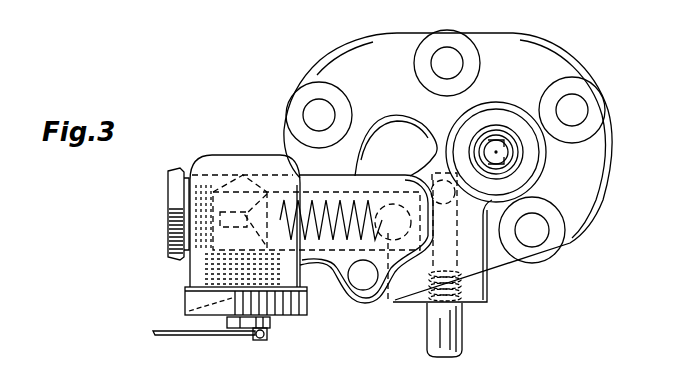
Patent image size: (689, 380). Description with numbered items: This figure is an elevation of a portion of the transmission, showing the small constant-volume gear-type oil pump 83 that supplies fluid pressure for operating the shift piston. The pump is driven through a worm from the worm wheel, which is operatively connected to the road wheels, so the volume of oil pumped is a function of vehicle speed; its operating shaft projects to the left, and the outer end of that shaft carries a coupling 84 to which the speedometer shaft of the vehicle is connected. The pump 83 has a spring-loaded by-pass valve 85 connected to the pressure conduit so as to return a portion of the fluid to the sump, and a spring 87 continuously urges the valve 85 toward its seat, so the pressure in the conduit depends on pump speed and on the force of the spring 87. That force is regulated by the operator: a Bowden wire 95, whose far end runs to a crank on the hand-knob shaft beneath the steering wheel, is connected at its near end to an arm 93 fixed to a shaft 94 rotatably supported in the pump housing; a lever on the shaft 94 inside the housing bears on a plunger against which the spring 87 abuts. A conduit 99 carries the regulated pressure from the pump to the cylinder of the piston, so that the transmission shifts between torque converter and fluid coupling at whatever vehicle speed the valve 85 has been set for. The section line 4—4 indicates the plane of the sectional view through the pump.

The oil pump 83 is at (523, 110).
The coupling 84 is at (494, 140).
The by-pass valve 85 is at (403, 302).
The spring 87 is at (366, 271).
The arm 93 is at (270, 323).
The shaft 94 is at (185, 303).
The Bowden wire 95 is at (183, 336).
The conduit 99 is at (463, 327).
The section line 4- 4 is at (496, 152).